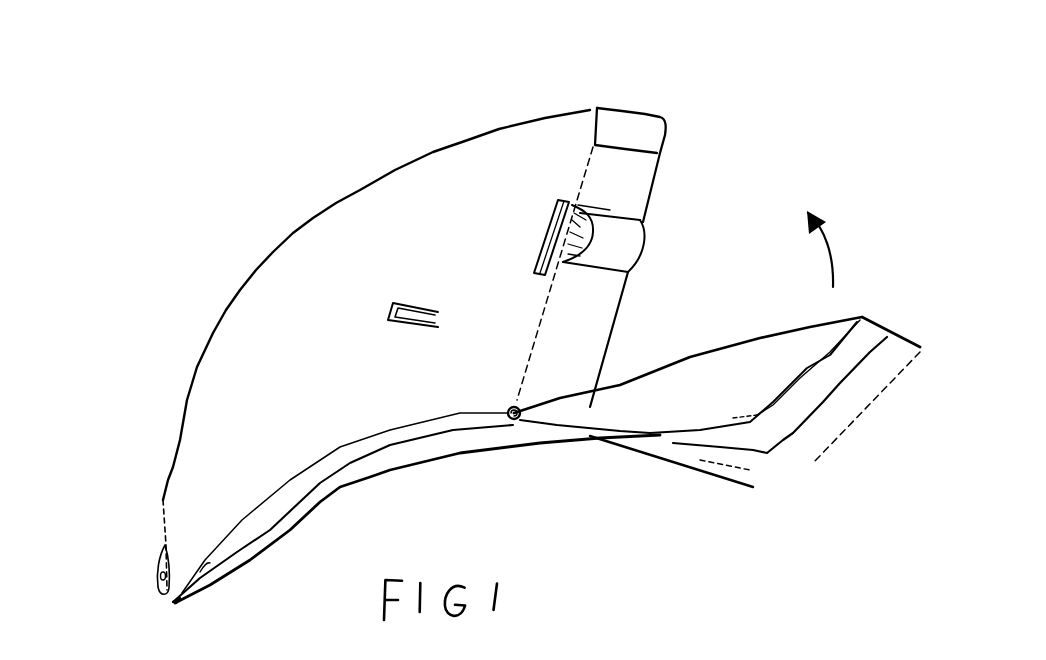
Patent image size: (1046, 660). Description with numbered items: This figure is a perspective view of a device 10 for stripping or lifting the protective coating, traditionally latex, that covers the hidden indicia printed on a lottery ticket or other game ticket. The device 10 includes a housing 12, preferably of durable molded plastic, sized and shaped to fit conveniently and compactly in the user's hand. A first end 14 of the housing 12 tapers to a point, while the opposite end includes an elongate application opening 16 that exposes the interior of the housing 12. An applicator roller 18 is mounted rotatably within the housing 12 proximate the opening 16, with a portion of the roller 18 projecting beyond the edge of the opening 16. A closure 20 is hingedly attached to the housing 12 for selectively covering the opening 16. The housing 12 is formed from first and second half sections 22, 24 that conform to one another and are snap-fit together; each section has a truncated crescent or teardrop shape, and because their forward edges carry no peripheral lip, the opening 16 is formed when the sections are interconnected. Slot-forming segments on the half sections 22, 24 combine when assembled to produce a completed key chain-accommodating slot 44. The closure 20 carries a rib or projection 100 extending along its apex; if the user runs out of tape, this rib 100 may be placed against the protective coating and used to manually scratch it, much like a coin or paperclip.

The device 10 is at (238, 182).
The housing 12 is at (433, 152).
The first end 14 is at (172, 601).
The application opening 16 is at (642, 188).
The applicator roller 18 is at (635, 242).
The closure 20 is at (767, 472).
The first half section 22 is at (367, 462).
The second half section 24 is at (263, 510).
The key chain-accommodating slot 44 is at (157, 563).
The rib 100 is at (823, 405).